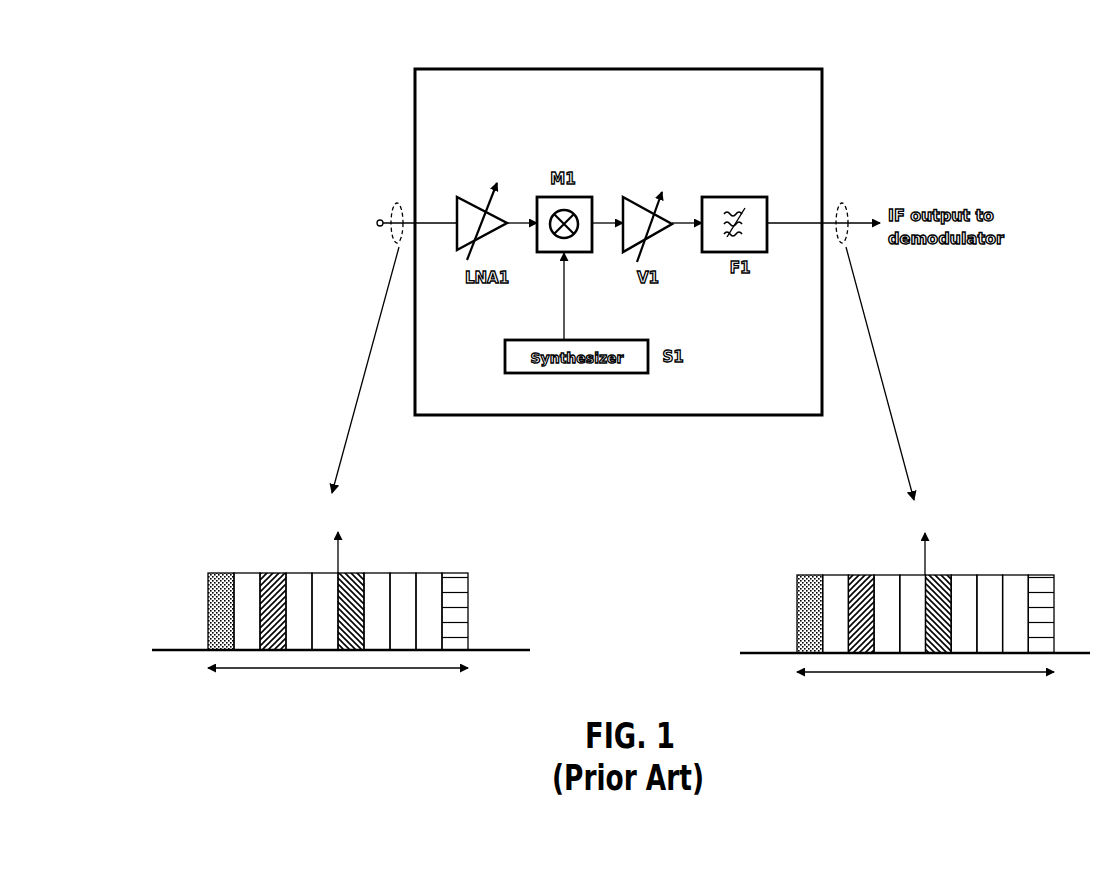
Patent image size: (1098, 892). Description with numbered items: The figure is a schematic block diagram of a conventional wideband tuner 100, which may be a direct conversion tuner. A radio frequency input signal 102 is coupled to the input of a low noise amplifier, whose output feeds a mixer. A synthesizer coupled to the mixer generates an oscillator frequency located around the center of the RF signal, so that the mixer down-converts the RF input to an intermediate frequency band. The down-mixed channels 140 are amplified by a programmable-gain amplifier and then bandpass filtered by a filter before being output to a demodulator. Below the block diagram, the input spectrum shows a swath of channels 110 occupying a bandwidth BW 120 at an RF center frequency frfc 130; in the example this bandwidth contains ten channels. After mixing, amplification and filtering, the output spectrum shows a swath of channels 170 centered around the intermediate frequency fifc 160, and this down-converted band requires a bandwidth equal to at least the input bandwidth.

The conventional wideband tuner 100 is at (873, 74).
The radio frequency (RF) input signal 102 is at (366, 237).
The swath of channels 110 is at (237, 522).
The bandwidth BW1 120 is at (338, 694).
The RF center frequency frfc 130 is at (357, 533).
The frequency down-mixed channels 140 is at (603, 218).
The intermediate frequency fifc 160 is at (940, 534).
The swath of channels 170 is at (967, 542).